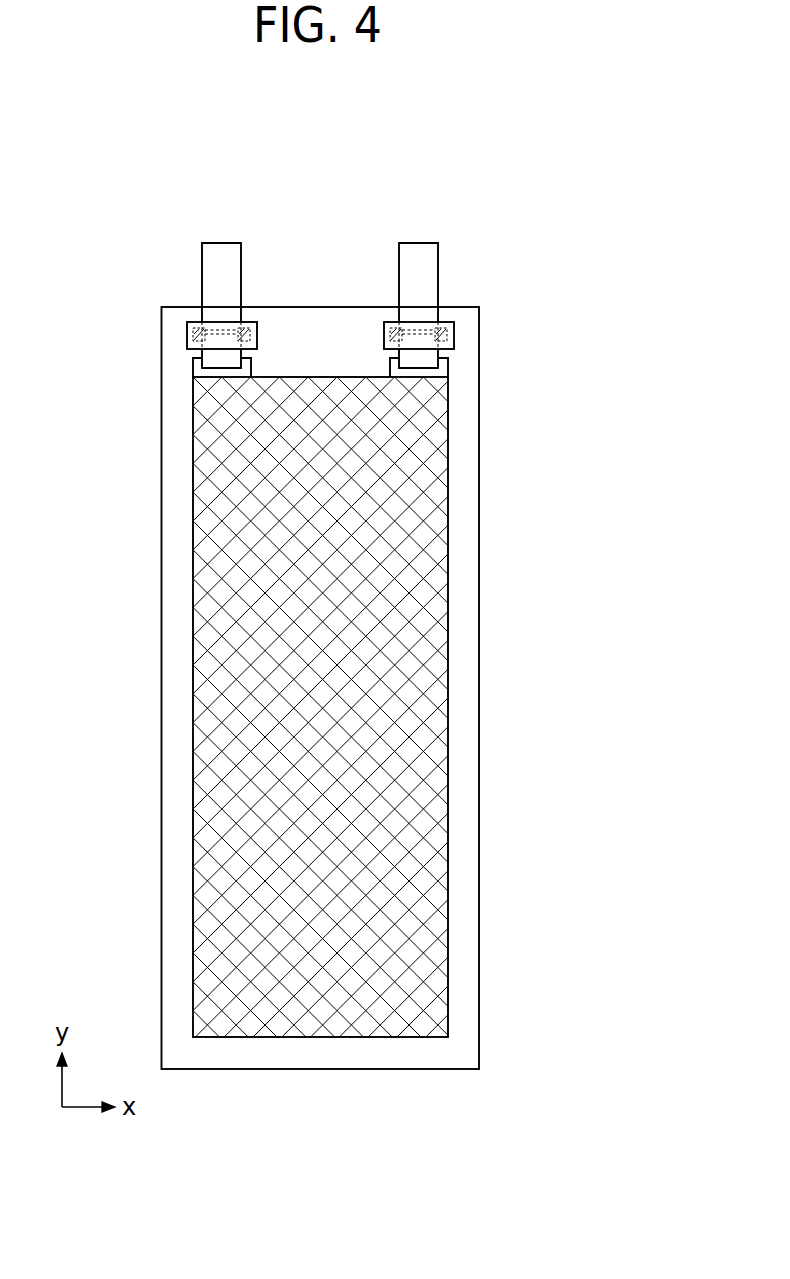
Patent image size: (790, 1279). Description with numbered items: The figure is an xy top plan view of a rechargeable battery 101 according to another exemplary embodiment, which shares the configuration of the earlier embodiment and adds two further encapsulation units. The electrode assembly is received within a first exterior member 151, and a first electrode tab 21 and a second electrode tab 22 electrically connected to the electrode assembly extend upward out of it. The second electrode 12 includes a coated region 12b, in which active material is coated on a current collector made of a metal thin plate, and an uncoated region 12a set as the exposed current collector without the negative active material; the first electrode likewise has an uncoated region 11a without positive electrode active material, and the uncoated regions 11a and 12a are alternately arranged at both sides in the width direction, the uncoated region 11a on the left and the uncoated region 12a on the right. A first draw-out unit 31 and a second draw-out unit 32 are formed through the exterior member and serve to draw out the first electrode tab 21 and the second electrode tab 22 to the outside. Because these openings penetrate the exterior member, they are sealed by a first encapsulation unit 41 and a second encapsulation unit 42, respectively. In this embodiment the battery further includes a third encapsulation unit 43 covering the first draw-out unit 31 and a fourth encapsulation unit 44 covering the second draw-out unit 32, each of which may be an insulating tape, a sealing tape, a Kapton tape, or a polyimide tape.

The rechargeable battery 101 is at (340, 158).
The first exterior member 151 is at (479, 686).
The second electrode 12 is at (547, 358).
The uncoated region 12a is at (440, 372).
The coated region 12b is at (424, 430).
The uncoated region 11a is at (200, 372).
The first electrode tab 21 is at (220, 258).
The second electrode tab 22 is at (417, 258).
The first draw-out unit 31 is at (199, 333).
The second draw-out unit 32 is at (397, 333).
The first encapsulation unit 41 is at (247, 330).
The second encapsulation unit 42 is at (445, 330).
The third encapsulation unit 43 is at (187, 338).
The fourth encapsulation unit 44 is at (453, 338).